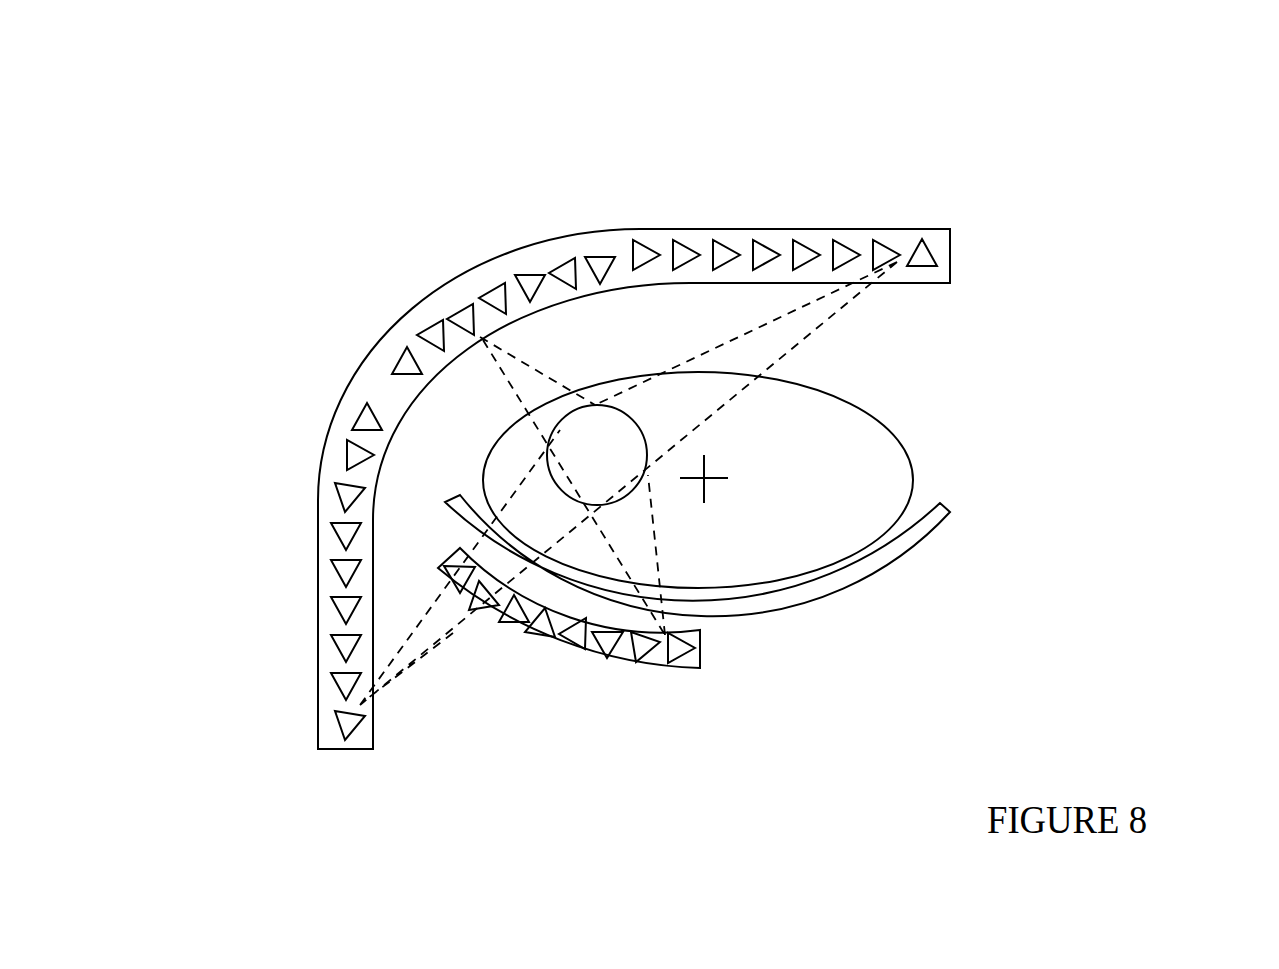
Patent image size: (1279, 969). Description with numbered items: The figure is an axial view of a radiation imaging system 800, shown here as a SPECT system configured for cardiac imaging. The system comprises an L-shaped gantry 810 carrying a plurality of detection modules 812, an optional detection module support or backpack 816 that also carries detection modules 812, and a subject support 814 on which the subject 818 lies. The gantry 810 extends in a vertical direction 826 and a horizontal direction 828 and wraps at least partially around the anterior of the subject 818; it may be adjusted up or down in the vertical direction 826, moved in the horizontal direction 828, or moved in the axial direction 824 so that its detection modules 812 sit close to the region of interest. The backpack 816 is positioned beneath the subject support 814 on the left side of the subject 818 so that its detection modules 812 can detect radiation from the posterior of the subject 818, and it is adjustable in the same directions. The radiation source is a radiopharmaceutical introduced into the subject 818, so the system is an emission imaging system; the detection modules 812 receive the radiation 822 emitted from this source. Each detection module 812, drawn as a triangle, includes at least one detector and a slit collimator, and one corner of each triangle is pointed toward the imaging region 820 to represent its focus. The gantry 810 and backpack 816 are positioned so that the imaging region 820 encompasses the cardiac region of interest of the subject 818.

The radiation imaging system 800 is at (1102, 212).
The gantry 810 is at (945, 232).
The detection modules 812 is at (650, 245).
The subject support 814 is at (950, 513).
The detection module support (backpack) 816 is at (700, 650).
The subject 818 is at (855, 465).
The imaging region 820 is at (563, 440).
The radiation 822 is at (523, 350).
The axial direction 824 is at (712, 470).
The vertical direction 826 is at (175, 627).
The horizontal direction 828 is at (745, 63).